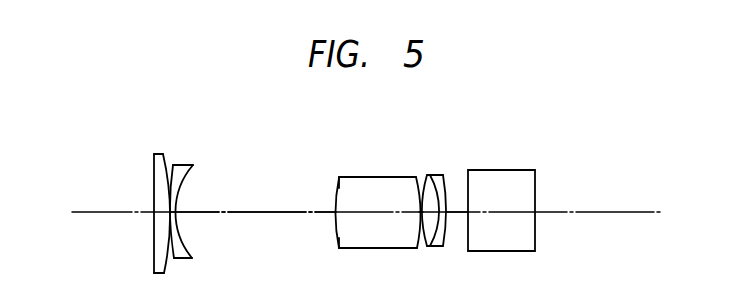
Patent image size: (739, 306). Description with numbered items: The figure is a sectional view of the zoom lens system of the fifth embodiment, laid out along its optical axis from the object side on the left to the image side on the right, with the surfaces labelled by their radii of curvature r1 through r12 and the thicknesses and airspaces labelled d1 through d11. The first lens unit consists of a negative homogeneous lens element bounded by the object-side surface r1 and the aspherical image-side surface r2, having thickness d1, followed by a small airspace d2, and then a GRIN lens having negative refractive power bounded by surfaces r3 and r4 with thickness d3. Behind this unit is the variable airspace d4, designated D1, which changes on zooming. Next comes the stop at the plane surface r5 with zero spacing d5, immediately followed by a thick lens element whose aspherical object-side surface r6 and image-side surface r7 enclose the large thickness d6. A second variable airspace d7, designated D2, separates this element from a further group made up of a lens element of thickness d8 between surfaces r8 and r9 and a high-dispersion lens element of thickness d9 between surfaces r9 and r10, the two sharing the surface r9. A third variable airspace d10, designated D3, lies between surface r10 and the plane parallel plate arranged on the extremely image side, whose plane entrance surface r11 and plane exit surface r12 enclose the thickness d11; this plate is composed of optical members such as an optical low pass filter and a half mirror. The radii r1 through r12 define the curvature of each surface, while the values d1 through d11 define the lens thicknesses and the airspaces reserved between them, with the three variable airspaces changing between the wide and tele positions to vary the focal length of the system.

The thickness of first lens element d1 is at (145, 228).
The airspace between first and second lens elements d2 is at (170, 208).
The thickness of second lens element d3 is at (207, 228).
The variable airspace D1 d4 is at (283, 211).
The spacing at stop d5 is at (327, 214).
The thickness of third lens element d6 is at (380, 217).
The variable airspace D2 d7 is at (421, 207).
The thickness of fourth lens element d8 is at (448, 227).
The thickness of fifth lens element d9 is at (468, 209).
The variable airspace D3 d10 is at (457, 208).
The thickness of plane parallel plate d11 is at (532, 224).
The first surface r1 is at (153, 246).
The second surface r2 is at (167, 259).
The third surface r3 is at (175, 262).
The fourth surface r4 is at (187, 247).
The stop surface r5 is at (338, 242).
The sixth surface r6 is at (340, 249).
The seventh surface r7 is at (417, 234).
The eighth surface r8 is at (425, 242).
The ninth surface r9 is at (440, 247).
The tenth surface r10 is at (446, 240).
The eleventh surface r11 is at (468, 232).
The twelfth surface r12 is at (535, 232).